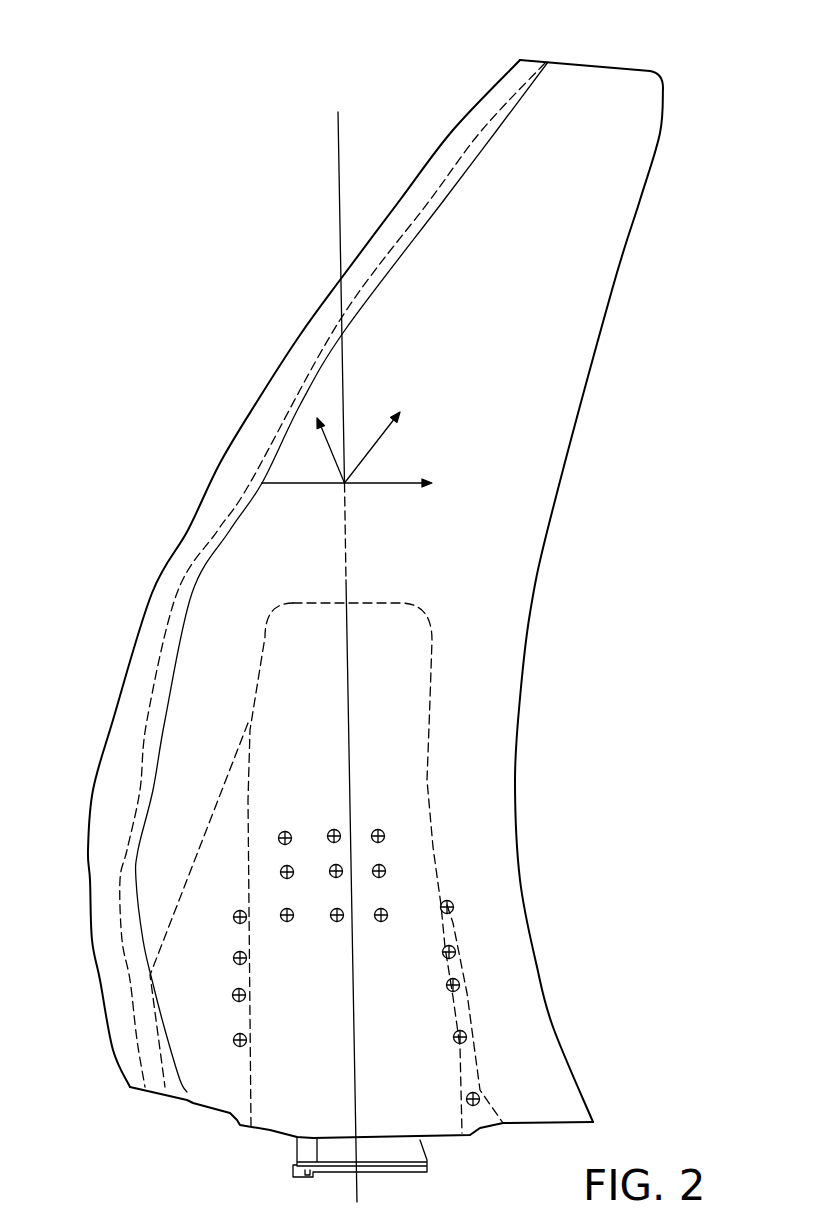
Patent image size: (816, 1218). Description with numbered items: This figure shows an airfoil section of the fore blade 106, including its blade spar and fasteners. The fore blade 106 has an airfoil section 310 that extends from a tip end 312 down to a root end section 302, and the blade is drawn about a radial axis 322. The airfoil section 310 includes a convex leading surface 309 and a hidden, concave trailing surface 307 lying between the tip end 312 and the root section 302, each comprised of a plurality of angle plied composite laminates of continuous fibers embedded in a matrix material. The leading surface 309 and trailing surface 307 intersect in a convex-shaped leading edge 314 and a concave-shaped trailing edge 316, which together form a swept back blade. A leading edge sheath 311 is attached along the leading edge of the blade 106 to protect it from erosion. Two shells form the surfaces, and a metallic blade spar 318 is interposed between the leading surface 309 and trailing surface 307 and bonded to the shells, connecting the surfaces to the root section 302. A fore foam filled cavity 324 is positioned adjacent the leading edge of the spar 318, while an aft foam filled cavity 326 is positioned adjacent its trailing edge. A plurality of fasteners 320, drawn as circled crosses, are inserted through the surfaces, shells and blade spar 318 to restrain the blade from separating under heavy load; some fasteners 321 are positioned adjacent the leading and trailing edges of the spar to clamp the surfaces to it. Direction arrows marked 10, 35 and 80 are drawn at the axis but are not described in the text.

The fore blade 106 is at (590, 28).
The tip end 312 is at (628, 75).
The trailing surface 307 is at (612, 321).
The leading edge 314 is at (214, 457).
The leading edge sheath 311 is at (143, 595).
The airfoil section 310 is at (506, 511).
The leading surface 309 is at (511, 636).
The trailing edge 316 is at (559, 1011).
The blade spar 318 is at (440, 841).
The fasteners 320 is at (377, 864).
The cooling holes 321 is at (246, 921).
The aft foam filled cavity 326 is at (474, 987).
The fore foam filled cavity 324 is at (138, 977).
The root end section 302 is at (308, 1182).
The radial axis 322 is at (360, 1188).
The axial direction arrow 80 is at (365, 485).
The direction arrow - 10 is at (323, 438).
The direction arrow 35 is at (392, 438).